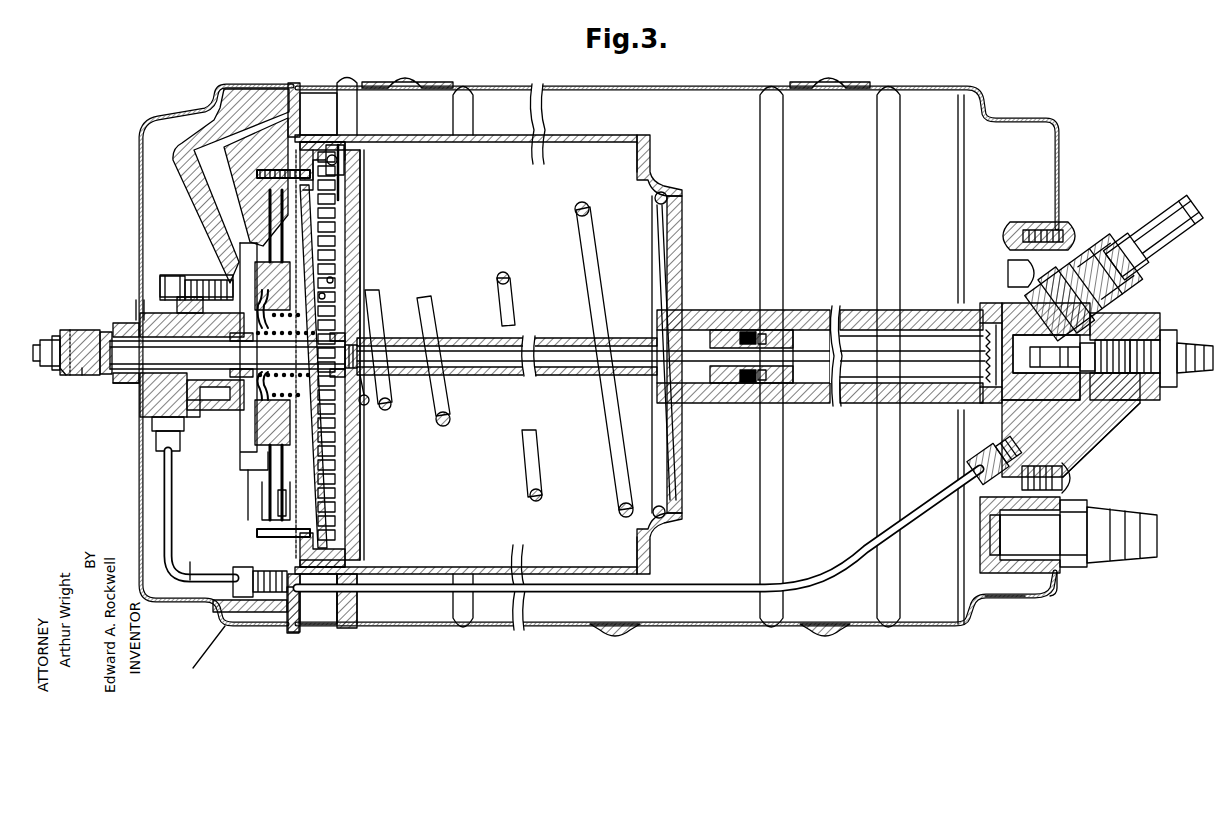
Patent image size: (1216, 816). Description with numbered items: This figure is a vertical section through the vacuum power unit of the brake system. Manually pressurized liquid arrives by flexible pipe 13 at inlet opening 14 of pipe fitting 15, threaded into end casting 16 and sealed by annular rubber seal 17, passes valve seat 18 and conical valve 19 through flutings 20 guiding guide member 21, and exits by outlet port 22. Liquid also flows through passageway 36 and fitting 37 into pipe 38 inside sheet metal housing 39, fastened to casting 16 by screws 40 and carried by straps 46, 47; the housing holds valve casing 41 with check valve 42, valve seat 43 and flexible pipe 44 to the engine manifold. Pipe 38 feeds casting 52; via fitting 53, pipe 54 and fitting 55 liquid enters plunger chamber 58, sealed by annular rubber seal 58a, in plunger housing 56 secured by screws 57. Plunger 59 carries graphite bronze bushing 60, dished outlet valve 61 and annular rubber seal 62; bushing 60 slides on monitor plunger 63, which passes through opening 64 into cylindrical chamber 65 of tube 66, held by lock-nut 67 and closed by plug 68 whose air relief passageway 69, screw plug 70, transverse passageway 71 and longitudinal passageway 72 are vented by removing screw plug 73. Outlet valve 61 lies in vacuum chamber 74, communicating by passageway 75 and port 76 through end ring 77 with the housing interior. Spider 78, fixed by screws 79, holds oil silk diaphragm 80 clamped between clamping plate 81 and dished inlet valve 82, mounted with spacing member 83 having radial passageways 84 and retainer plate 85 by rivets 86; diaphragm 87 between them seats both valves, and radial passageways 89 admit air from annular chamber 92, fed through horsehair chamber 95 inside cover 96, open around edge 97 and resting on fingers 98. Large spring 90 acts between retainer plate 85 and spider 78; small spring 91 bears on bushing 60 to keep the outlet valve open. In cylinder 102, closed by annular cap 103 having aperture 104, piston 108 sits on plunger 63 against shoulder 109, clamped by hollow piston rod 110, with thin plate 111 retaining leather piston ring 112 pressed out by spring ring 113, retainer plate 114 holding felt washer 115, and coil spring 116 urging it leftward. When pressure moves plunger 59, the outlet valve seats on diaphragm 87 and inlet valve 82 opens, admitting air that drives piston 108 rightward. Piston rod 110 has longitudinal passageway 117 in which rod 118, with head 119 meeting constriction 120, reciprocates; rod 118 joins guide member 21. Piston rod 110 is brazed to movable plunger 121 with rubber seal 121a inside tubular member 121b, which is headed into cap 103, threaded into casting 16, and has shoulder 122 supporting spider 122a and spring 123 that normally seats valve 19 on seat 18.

The flexible pipe 13 is at (1203, 344).
The inlet opening 14 is at (1126, 400).
The pipe fitting 15 is at (1168, 388).
The end casting 16 is at (1077, 437).
The annular rubber seal 17 is at (1135, 320).
The valve seat 18 is at (1101, 362).
The conical valve 19 is at (1046, 368).
The flutings 20 is at (1118, 300).
The guide member 21 is at (1010, 405).
The outlet port 22 is at (1090, 262).
The passageway 36 is at (1095, 420).
The fitting 37 is at (970, 468).
The pipe 38 is at (856, 556).
The sheet metal power unit housing 39 is at (1000, 598).
The screws 40 is at (1066, 480).
The valve casing 41 is at (1078, 512).
The check valve 42 is at (1032, 578).
The valve seat 43 is at (990, 540).
The flexible pipe 44 is at (1122, 518).
The strap 46 is at (822, 80).
The strap 47 is at (418, 80).
The casting 52 is at (264, 612).
The fitting 53 is at (232, 588).
The pipe 54 is at (173, 528).
The fitting 55 is at (190, 410).
The plunger housing 56 is at (150, 313).
The screws 57 is at (167, 280).
The plunger chamber 58 is at (142, 408).
The annular rubber seal 58a is at (156, 447).
The plunger 59 is at (190, 273).
The graphite bronze bushing 60 is at (206, 280).
The dished outlet valve 61 is at (242, 252).
The annular rubber seal 62 is at (222, 473).
The monitor plunger 63 is at (118, 323).
The opening 64 is at (119, 353).
The cylindrical chamber 65 is at (92, 332).
The tube 66 is at (116, 384).
The lock-nut 67 is at (134, 312).
The plug 68 is at (63, 332).
The air relief passageway 69 is at (82, 378).
The screw plug 70 is at (66, 378).
The transverse passageway 71 is at (75, 376).
The longitudinal passageway 72 is at (60, 372).
The removable screw plug 73 is at (47, 338).
The vacuum chamber 74 is at (250, 480).
The passageway 75 is at (212, 163).
The port 76 is at (306, 128).
The end ring 77 is at (295, 98).
The spider 78 is at (325, 155).
The screws 79 is at (286, 168).
The oil silk diaphragm 80 is at (284, 180).
The clamping plate 81 is at (298, 213).
The dished inlet valve 82 is at (272, 240).
The spacing member 83 is at (255, 432).
The radial passageways 84 is at (333, 280).
The retainer plate 85 is at (270, 385).
The rivets 86 is at (323, 440).
The diaphragm 87 is at (264, 500).
The radial passageways 89 is at (312, 203).
The large spring 90 is at (325, 296).
The small spring 91 is at (366, 378).
The annular chamber 92 is at (278, 505).
The chamber 95 is at (195, 560).
The cover 96 is at (152, 428).
The edge 97 is at (288, 632).
The fingers 98 is at (210, 647).
The cylinder 102 is at (497, 144).
The annular cap 103 is at (650, 168).
The aperture 104 is at (673, 262).
The piston 108 is at (361, 222).
The shoulder 109 is at (344, 352).
The hollow piston rod 110 is at (380, 334).
The thin plate 111 is at (346, 186).
The leather piston ring 112 is at (356, 170).
The spring ring 113 is at (340, 146).
The retainer plate 114 is at (362, 238).
The felt washer 115 is at (380, 140).
The coil spring 116 is at (542, 495).
The longitudinal passageway 117 is at (540, 340).
The rod 118 is at (810, 345).
The head 119 is at (724, 330).
The constriction 120 is at (748, 330).
The movable plunger 121 is at (790, 386).
The rubber seal 121a is at (785, 328).
The tubular member 121b is at (845, 328).
The shoulder 122 is at (992, 304).
The spider 122a is at (984, 345).
The spring 123 is at (950, 405).